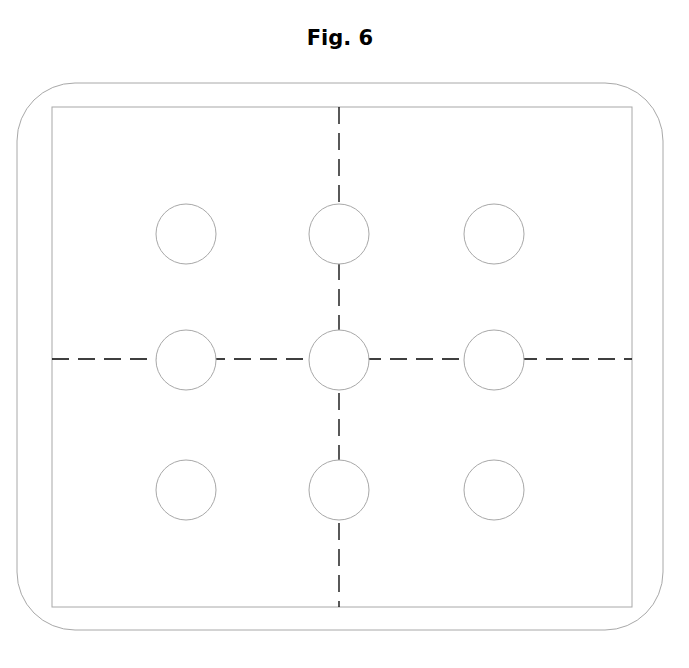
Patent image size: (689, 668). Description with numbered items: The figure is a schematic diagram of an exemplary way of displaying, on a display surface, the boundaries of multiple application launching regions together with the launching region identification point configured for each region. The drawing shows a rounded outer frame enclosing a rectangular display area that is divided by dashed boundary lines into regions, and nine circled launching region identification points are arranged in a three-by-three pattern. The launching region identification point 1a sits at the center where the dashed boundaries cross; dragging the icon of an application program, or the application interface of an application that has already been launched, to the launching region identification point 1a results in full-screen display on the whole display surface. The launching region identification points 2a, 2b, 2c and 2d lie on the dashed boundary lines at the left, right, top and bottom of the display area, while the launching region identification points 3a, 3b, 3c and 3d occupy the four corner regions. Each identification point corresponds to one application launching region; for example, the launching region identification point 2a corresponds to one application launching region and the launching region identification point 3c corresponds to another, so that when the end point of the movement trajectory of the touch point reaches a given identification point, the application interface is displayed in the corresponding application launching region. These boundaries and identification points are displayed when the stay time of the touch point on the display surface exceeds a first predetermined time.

The launching region identification point 1a is at (339, 360).
The launching region identification point 2a is at (186, 360).
The launching region identification point 2b is at (494, 360).
The launching region identification point 2c is at (339, 234).
The launching region identification point 2d is at (339, 490).
The launching region identification point 3a is at (186, 234).
The launching region identification point 3b is at (186, 490).
The launching region identification point 3c is at (494, 234).
The launching region identification point 3d is at (494, 490).